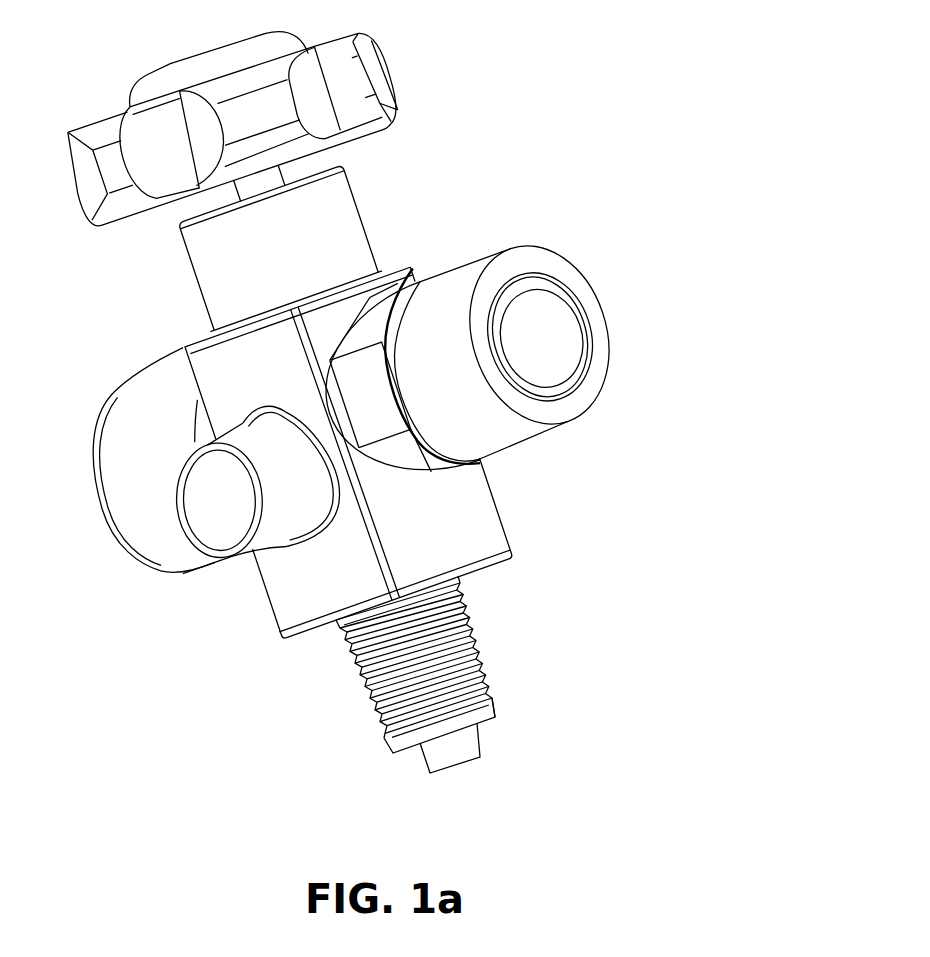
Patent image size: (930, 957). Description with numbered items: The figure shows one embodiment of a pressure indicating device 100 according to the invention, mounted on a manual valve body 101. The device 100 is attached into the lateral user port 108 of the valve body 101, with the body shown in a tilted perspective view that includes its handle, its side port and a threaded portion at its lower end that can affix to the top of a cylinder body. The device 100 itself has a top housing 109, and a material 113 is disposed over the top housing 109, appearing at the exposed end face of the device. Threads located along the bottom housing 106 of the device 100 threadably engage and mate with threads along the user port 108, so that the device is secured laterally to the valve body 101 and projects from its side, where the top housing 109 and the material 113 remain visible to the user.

The pressure indicating device 100 is at (512, 216).
The manual valve body 101 is at (487, 540).
The bottom housing 106 is at (387, 303).
The lateral user port 108 is at (393, 465).
The top housing 109 is at (497, 432).
The material 113 is at (568, 349).